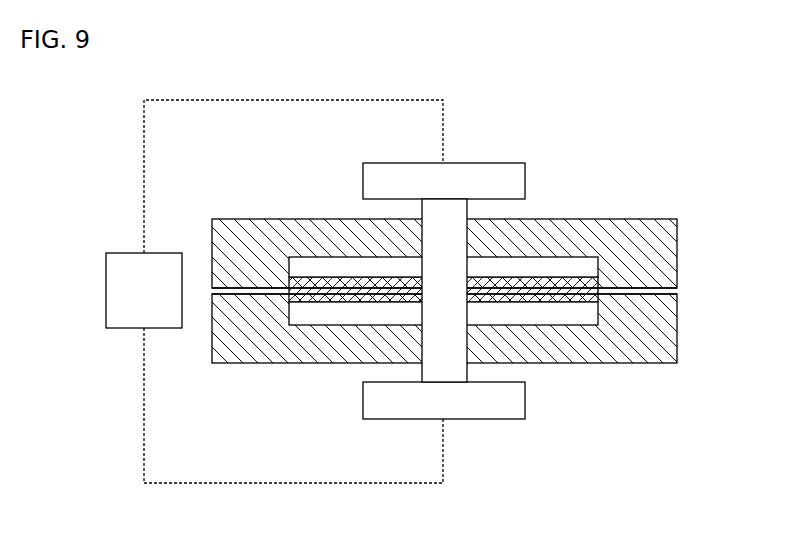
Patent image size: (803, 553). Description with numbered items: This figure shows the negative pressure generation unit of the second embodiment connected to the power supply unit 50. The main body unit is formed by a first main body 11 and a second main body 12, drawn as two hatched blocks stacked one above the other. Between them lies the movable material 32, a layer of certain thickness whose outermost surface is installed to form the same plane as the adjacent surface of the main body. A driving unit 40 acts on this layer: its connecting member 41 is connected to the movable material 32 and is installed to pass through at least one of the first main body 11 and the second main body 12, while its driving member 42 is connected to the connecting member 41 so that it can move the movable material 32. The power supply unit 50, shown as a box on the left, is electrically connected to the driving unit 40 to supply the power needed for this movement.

The first main body 11 is at (663, 258).
The second main body 12 is at (663, 347).
The movable material 32 is at (572, 262).
The driving unit 40 is at (445, 294).
The connecting member 41 is at (422, 246).
The driving member 42 is at (493, 172).
The power supply unit 50 is at (163, 246).